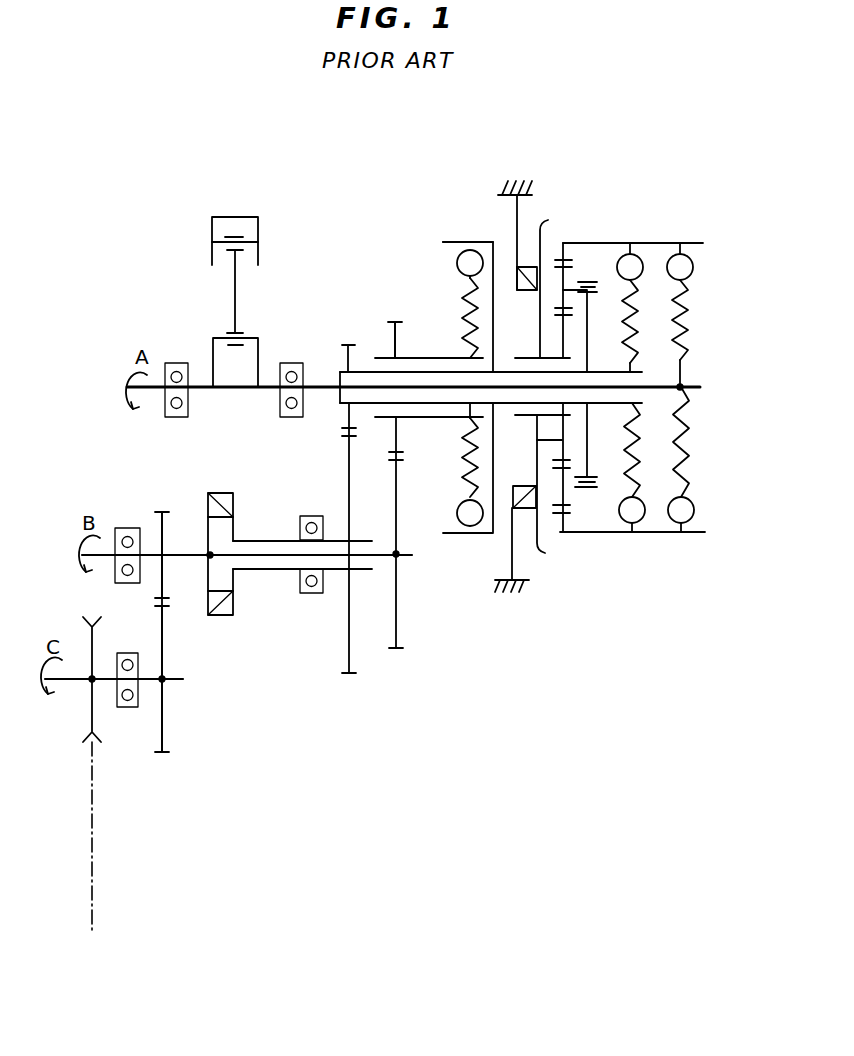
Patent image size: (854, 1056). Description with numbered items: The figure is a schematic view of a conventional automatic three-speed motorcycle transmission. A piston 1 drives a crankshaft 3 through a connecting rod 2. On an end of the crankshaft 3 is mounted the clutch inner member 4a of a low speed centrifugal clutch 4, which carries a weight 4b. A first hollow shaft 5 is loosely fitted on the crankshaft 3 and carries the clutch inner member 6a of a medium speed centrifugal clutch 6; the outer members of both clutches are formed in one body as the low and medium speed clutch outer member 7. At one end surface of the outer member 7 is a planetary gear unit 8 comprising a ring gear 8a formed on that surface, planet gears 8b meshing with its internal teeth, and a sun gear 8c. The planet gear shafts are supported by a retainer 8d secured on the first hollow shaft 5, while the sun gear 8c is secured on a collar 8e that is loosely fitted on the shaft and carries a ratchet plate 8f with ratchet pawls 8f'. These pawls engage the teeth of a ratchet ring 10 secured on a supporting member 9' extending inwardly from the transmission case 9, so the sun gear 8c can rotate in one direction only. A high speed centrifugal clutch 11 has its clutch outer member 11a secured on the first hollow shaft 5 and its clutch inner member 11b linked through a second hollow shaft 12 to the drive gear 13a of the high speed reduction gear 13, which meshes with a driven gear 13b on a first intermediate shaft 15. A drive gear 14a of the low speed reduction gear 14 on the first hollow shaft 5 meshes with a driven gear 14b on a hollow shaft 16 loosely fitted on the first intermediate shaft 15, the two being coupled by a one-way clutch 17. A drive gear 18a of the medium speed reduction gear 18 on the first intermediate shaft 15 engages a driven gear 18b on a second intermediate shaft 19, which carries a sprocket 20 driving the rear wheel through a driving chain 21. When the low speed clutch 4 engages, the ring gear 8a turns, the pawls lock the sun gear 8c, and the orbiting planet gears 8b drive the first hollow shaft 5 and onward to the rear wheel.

The piston 1 is at (230, 216).
The connecting rod 2 is at (239, 303).
The crankshaft 3 is at (323, 383).
The centrifugal clutch for first or low speed 4 is at (683, 242).
The clutch inner member 4a is at (690, 340).
The weight 4b is at (694, 267).
The first hollow shaft 5 is at (610, 371).
The centrifugal clutch for second or medium speed 6 is at (629, 242).
The clutch inner member 6a is at (622, 326).
The low and medium speed clutch outer member 7 is at (651, 243).
The planetary gear unit 8 is at (550, 280).
The ring gear 8a is at (557, 526).
The planet gears 8b is at (565, 494).
The sun gear 8c is at (540, 440).
The retainer 8d is at (588, 461).
The collar 8e is at (533, 357).
The ratchet plate 8f is at (541, 548).
The ratchet pawls 8f' is at (556, 231).
The transmission case 9 is at (515, 162).
The supporting member 9' is at (550, 199).
The ratchet ring 10 is at (515, 277).
The centrifugal clutch for third or high speed 11 is at (475, 225).
The clutch outer member 11a is at (472, 240).
The clutch inner member 11b is at (457, 306).
The second hollow shaft 12 is at (427, 357).
The reduction gear for the high speed 13 is at (394, 305).
The drive gear 13a is at (392, 343).
The driven gear 13b is at (396, 623).
The reduction gear for the low speed 14 is at (343, 308).
The drive gear 14a is at (345, 357).
The driven gear 14b is at (349, 653).
The first intermediate shaft 15 is at (410, 555).
The hollow shaft 16 is at (268, 540).
The one-way clutch 17 is at (223, 493).
The reduction gear for the medium speed 18 is at (163, 492).
The drive gear 18a is at (161, 528).
The driven gear 18b is at (162, 723).
The second intermediate shaft 19 is at (175, 673).
The sprocket 20 is at (92, 636).
The driving chain 21 is at (92, 827).